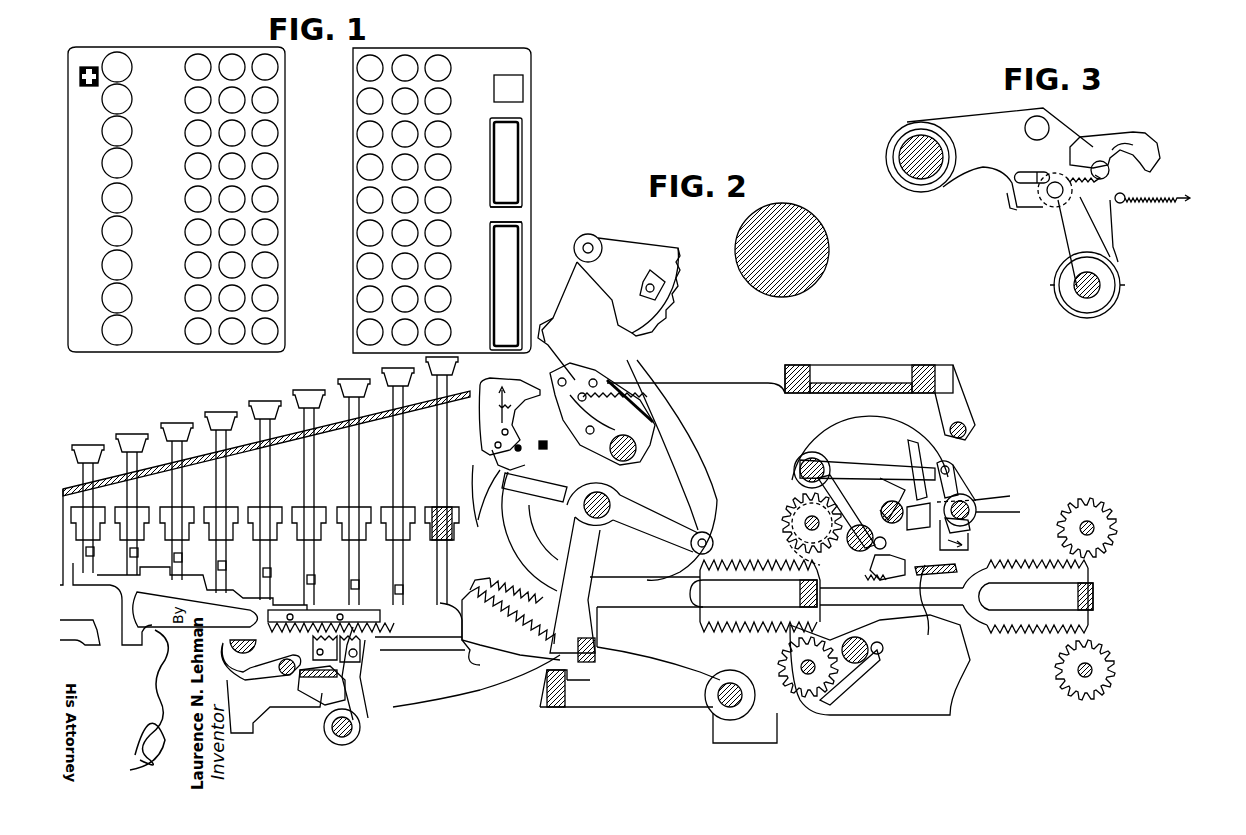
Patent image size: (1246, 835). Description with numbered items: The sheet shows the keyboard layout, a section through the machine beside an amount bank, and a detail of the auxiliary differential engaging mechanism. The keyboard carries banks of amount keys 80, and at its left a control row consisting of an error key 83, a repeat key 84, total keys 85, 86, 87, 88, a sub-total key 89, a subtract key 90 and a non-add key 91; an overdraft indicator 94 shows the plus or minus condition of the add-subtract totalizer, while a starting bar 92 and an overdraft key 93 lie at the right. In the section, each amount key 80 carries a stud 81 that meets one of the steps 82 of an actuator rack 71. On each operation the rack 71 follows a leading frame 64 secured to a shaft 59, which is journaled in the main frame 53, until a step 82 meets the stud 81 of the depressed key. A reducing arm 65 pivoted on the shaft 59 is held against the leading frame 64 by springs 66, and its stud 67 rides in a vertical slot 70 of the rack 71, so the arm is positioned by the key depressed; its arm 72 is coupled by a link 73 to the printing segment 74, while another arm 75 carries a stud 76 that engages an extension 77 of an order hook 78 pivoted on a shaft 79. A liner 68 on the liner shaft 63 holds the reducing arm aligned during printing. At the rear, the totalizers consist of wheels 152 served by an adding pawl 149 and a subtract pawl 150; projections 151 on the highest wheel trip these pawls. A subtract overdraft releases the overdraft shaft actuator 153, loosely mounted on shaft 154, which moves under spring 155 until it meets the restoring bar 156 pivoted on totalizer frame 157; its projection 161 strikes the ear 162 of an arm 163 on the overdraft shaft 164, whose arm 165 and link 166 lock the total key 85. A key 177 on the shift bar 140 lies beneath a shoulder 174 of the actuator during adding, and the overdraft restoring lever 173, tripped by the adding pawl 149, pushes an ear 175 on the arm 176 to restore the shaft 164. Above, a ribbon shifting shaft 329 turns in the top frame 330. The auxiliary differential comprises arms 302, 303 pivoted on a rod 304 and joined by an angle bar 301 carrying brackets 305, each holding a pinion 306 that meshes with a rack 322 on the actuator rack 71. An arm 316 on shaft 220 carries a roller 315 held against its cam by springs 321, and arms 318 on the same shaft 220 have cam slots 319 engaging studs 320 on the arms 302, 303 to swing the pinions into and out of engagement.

In FIG. 1, the overdraft indicator 94 is at (97, 67).
In FIG. 1, the amount keys 80 is at (231, 56).
In FIG. 2, the amount keys 80 is at (262, 418).
In FIG. 1, the non-add key 91 is at (132, 67).
In FIG. 1, the sub-total key 89 is at (132, 99).
In FIG. 1, the subtract key 90 is at (131, 133).
In FIG. 1, the total key 86 is at (131, 165).
In FIG. 1, the total key 88 is at (131, 199).
In FIG. 1, the total key 87 is at (131, 232).
In FIG. 1, the No. 1 total key 85 is at (131, 266).
In FIG. 1, the repeat key 84 is at (131, 299).
In FIG. 1, the error key 83 is at (131, 332).
In FIG. 1, the overdraft key 93 is at (494, 88).
In FIG. 1, the starting bar 92 is at (490, 213).
In FIG. 2, the stud 81 is at (94, 551).
In FIG. 2, the steps 82 is at (143, 606).
In FIG. 2, the printing segment 74 is at (605, 262).
In FIG. 2, the link 73 is at (670, 428).
In FIG. 2, the order hook 78 is at (515, 392).
In FIG. 2, the stud 76 is at (495, 440).
In FIG. 2, the shaft 79 is at (534, 485).
In FIG. 2, the arm 75 is at (575, 445).
In FIG. 2, the extension 77 is at (497, 505).
In FIG. 2, the shaft 59 is at (608, 495).
In FIG. 2, the arm 72 is at (650, 515).
In FIG. 2, the reducing arm 65 is at (575, 535).
In FIG. 2, the vertical slot 70 is at (580, 598).
In FIG. 2, the leading frame 64 is at (597, 625).
In FIG. 2, the springs 66 is at (514, 588).
In FIG. 2, the stud 67 is at (525, 650).
In FIG. 2, the actuator rack 71 is at (470, 632).
In FIG. 2, the main frame 53 is at (445, 700).
In FIG. 2, the liner 68 is at (640, 708).
In FIG. 2, the liner shaft 63 is at (717, 695).
In FIG. 2, the rack 322 is at (327, 610).
In FIG. 2, the rod 304 is at (243, 640).
In FIG. 3, the rod 304 is at (920, 170).
In FIG. 2, the pinions 306 is at (373, 648).
In FIG. 3, the pinions 306 is at (1120, 142).
In FIG. 2, the brackets 305 is at (365, 656).
In FIG. 2, the arm 302 is at (262, 672).
In FIG. 2, the angle bar 301 is at (324, 676).
In FIG. 3, the angle bar 301 is at (1008, 203).
In FIG. 2, the arms 318 is at (347, 690).
In FIG. 3, the arms 318 is at (1112, 208).
In FIG. 2, the shaft 220 is at (332, 727).
In FIG. 3, the shaft 220 is at (1095, 283).
In FIG. 2, the top frame 330 is at (922, 372).
In FIG. 2, the ribbon shifting shaft 329 is at (958, 422).
In FIG. 2, the link 166 is at (876, 460).
In FIG. 2, the overdraft restoring lever 173 is at (908, 462).
In FIG. 2, the overdraft shaft actuator 153 is at (930, 470).
In FIG. 2, the totalizer wheels 152 is at (788, 500).
In FIG. 2, the adding pawl 149 is at (840, 492).
In FIG. 2, the key 177 is at (896, 500).
In FIG. 2, the shoulder 174 is at (905, 508).
In FIG. 2, the arm 165 is at (955, 482).
In FIG. 2, the shaft 154 is at (960, 500).
In FIG. 2, the arm 163 is at (995, 498).
In FIG. 2, the ear 162 is at (970, 509).
In FIG. 2, the overdraft shaft 164 is at (1012, 511).
In FIG. 2, the spring 155 is at (972, 527).
In FIG. 2, the arm 176 is at (970, 545).
In FIG. 2, the restoring bar 156 is at (955, 566).
In FIG. 2, the projections 151 is at (790, 548).
In FIG. 2, the projection 161 is at (923, 517).
In FIG. 2, the shift bar 140 is at (894, 546).
In FIG. 2, the subtract pawl 150 is at (845, 595).
In FIG. 2, the ear 175 is at (930, 595).
In FIG. 2, the totalizer frame 157 is at (855, 712).
In FIG. 3, the arm 303 is at (985, 100).
In FIG. 3, the stud 320 is at (1100, 161).
In FIG. 3, the cam slot 319 is at (1155, 172).
In FIG. 3, the springs 321 is at (1155, 205).
In FIG. 3, the roller 315 is at (1050, 212).
In FIG. 3, the arm 316 is at (1067, 228).